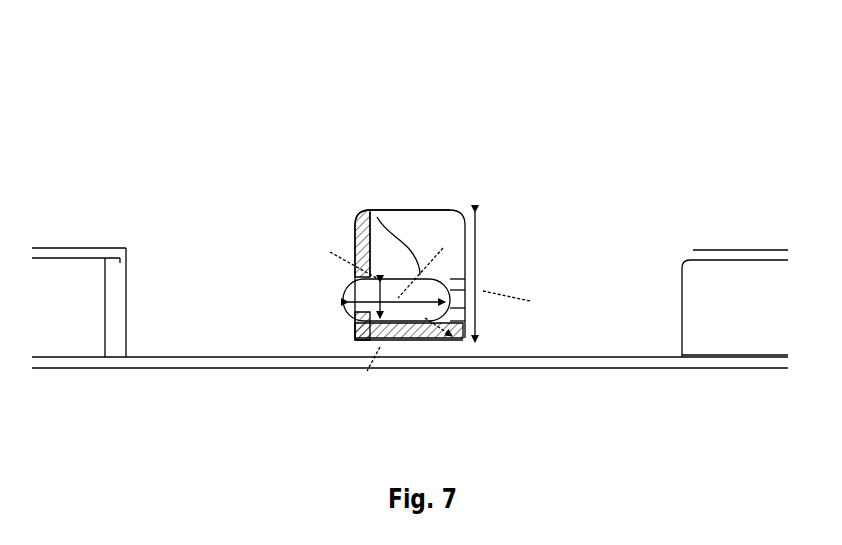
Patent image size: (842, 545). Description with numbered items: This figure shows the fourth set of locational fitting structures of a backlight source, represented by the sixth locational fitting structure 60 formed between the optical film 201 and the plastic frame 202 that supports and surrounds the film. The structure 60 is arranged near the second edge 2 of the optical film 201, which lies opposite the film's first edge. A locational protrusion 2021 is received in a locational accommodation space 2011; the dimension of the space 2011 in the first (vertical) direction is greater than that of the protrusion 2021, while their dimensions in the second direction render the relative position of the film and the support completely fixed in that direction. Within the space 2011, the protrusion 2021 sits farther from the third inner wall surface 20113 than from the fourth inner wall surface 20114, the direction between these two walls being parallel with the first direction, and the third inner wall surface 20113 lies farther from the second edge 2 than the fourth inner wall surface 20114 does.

The second edge 2 is at (507, 363).
The optical film 201 is at (597, 310).
The plastic frame 202 is at (68, 282).
The locational accommodation space 2011 is at (365, 242).
The third inner wall surface 20113 is at (423, 208).
The fourth inner wall surface 20114 is at (420, 342).
The locational protrusion 2021 is at (375, 207).
The sixth locational fitting structure 60 is at (267, 130).